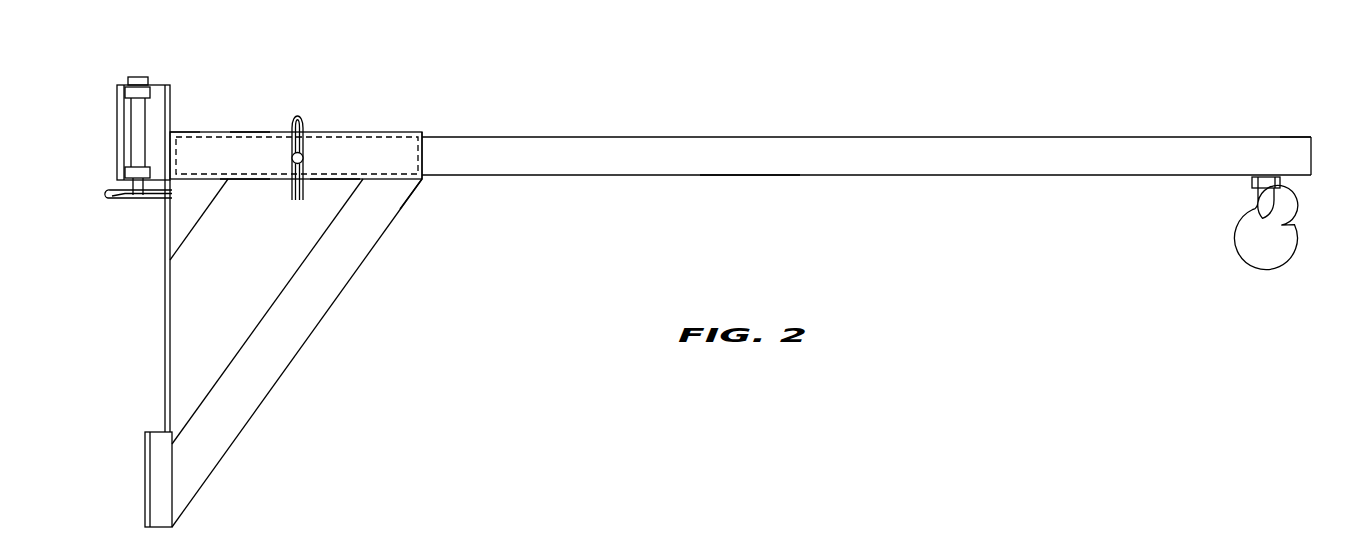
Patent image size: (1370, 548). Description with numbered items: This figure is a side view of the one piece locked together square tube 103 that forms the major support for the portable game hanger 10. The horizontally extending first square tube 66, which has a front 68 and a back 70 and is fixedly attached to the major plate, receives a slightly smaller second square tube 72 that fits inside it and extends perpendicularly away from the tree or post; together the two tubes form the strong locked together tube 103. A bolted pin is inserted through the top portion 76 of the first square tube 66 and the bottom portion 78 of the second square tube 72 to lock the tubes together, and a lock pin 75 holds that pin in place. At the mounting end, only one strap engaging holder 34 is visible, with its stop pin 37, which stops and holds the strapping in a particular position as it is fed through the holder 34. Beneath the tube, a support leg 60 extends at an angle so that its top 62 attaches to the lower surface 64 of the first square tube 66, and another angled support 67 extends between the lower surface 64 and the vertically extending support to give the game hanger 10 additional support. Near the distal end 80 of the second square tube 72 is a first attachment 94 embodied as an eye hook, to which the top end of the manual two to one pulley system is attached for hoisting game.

The portable game hanger 10 is at (842, 120).
The strap engaging holder 34 is at (140, 115).
The stop pin 37 is at (108, 199).
The support leg 60 is at (338, 298).
The top of the support leg 62 is at (422, 179).
The lower surface of the horizontally extending support 64 is at (247, 179).
The first square tube 66 is at (375, 132).
The angled support 67 is at (197, 228).
The front of the first square tube 68 is at (422, 132).
The back of the first square tube 70 is at (181, 132).
The second square tube 72 is at (735, 137).
The lock pin 75 is at (298, 117).
The top portion of the first square tube 76 is at (245, 132).
The bottom portion of the second square tube 78 is at (762, 175).
The distal end of the second square tube 80 is at (1311, 137).
The first attachment 94 is at (1293, 222).
The one piece locked together square tube 103 is at (495, 122).